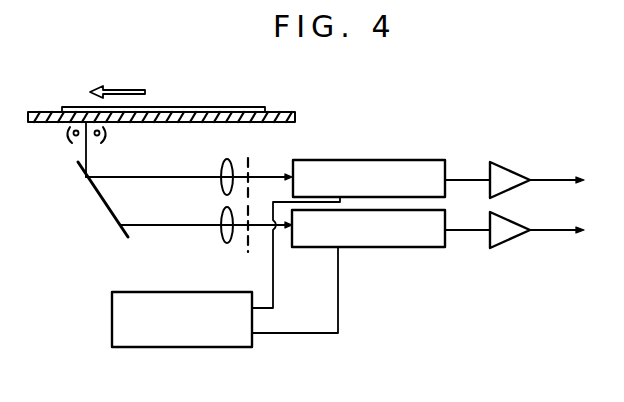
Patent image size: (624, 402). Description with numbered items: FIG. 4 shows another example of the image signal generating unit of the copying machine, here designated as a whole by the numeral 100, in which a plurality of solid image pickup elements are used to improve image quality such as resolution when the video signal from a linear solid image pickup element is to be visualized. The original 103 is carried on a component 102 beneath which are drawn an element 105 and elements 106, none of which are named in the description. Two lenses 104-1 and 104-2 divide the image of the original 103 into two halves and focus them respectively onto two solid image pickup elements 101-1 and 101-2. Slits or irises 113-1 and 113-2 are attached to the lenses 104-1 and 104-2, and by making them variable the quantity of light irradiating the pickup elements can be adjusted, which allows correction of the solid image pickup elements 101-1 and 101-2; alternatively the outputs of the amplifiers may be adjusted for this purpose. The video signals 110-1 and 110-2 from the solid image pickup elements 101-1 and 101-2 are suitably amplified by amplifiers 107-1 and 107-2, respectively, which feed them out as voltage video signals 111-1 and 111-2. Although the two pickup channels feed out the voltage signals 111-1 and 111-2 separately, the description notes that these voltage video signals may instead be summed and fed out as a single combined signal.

The image reading apparatus 100 is at (456, 109).
The solid image pickup element 101-1 is at (376, 160).
The solid image pickup element 101-2 is at (383, 247).
The conveyor belt / drive 102 is at (40, 108).
The original 103 is at (75, 107).
The lens 104-1 is at (222, 170).
The lens 104-2 is at (222, 222).
The half mirror 105 is at (104, 207).
The light sources 106 is at (68, 146).
The amplifier 107-1 is at (510, 163).
The amplifier 107-2 is at (508, 248).
The video signal 110-1 is at (463, 178).
The video signal 110-2 is at (465, 232).
The voltage signal 111-1 is at (555, 178).
The voltage signal 111-2 is at (558, 232).
The slit or iris 113-1 is at (252, 165).
The slit or iris 113-2 is at (249, 253).